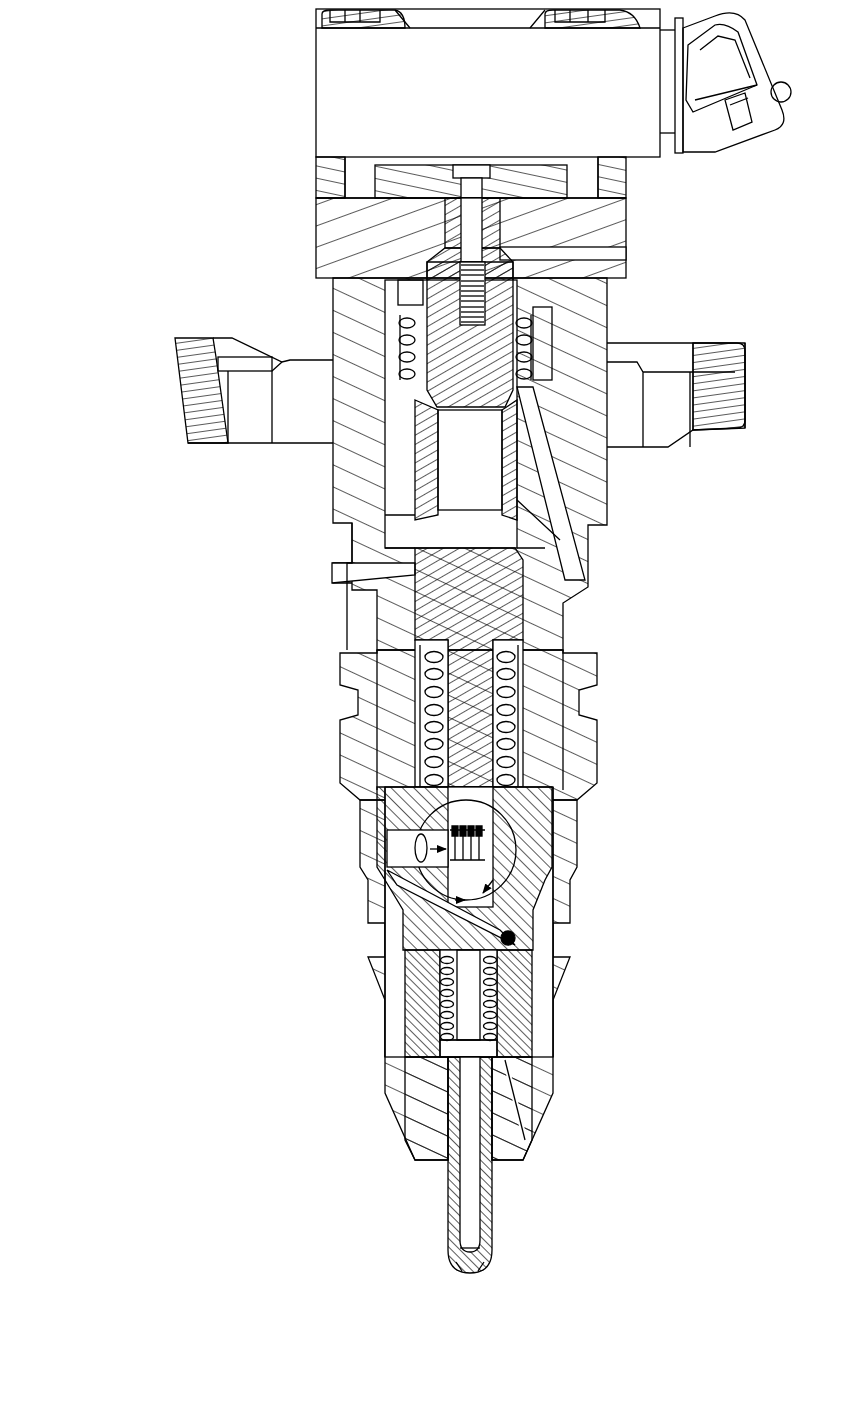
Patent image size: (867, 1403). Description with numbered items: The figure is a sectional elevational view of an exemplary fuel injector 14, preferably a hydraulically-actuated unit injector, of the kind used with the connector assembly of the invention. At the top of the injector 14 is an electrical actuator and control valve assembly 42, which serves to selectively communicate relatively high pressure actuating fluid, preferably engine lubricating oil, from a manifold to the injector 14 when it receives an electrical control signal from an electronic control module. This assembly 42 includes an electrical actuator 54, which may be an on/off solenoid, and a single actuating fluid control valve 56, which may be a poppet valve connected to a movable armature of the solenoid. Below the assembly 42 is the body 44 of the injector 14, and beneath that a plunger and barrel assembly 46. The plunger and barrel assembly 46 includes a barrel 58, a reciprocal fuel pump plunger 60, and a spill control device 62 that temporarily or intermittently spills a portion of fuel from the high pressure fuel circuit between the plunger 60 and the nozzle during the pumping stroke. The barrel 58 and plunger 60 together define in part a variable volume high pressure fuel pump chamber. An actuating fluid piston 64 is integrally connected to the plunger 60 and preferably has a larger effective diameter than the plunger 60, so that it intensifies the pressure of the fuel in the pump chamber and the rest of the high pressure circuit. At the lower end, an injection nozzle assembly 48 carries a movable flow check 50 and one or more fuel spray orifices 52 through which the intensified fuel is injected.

The injector 14 is at (128, 110).
The electrical actuator and control valve assembly 42 is at (292, 95).
The body 44 is at (333, 497).
The plunger and barrel assembly 46 is at (570, 850).
The injection nozzle assembly 48 is at (400, 1088).
The movable flow check 50 is at (468, 1200).
The fuel spray orifices 52 is at (458, 1270).
The electrical actuator 54 is at (316, 128).
The actuating fluid control valve 56 is at (400, 330).
The barrel 58 is at (400, 800).
The fuel pump plunger 60 is at (470, 700).
The spill control device 62 is at (405, 850).
The actuating fluid piston 64 is at (415, 617).